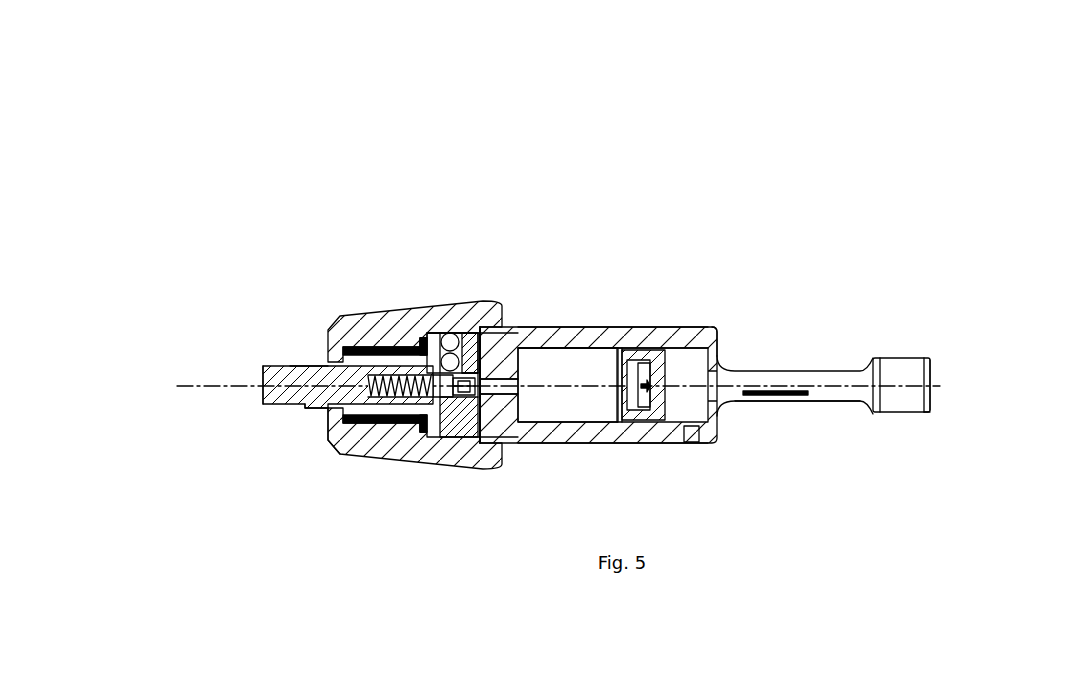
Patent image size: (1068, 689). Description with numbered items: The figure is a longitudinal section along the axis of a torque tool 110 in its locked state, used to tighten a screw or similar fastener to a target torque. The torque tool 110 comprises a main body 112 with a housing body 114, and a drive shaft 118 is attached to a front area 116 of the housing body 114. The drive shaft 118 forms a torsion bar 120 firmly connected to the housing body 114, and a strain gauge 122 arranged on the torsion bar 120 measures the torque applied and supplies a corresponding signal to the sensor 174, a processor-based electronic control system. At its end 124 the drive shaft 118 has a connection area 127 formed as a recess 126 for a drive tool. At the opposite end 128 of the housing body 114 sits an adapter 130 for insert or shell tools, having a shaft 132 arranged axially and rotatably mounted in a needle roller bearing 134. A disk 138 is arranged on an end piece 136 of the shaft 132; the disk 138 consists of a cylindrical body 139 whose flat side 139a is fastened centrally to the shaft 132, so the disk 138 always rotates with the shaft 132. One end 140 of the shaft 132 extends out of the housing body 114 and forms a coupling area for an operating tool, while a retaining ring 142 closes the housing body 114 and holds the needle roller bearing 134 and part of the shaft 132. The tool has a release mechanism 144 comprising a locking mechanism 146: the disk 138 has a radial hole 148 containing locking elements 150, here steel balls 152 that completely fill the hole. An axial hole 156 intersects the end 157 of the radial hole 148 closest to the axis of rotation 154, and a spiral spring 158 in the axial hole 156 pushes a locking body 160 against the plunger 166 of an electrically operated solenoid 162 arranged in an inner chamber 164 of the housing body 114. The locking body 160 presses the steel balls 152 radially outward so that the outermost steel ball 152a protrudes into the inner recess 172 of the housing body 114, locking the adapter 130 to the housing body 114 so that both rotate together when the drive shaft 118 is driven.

The torque tool 110 is at (622, 303).
The main body 112 is at (642, 495).
The housing body 114 is at (644, 283).
The front area 116 is at (762, 306).
The drive shaft 118 is at (798, 361).
The torsion bar 120 is at (841, 429).
The strain gauge 122 is at (805, 438).
The end 124 is at (951, 363).
The recess 126 is at (977, 435).
The connection area 127 is at (984, 383).
The end 128 is at (351, 412).
The adapter 130 is at (310, 325).
The shaft 132 is at (257, 423).
The needle roller bearing 134 is at (357, 486).
The end piece 136 is at (388, 503).
The disk 138 is at (487, 499).
The cylindrical body 139 is at (503, 472).
The flat side 139a is at (387, 282).
The end 140 is at (200, 365).
The retaining ring 142 is at (273, 445).
The release mechanism 144 is at (473, 221).
The locking mechanism 146 is at (541, 338).
The radial hole 148 is at (512, 287).
The locking elements 150 is at (405, 220).
The steel balls 152 is at (400, 256).
The outermost steel ball 152a is at (387, 238).
The axis of rotation 154 is at (520, 404).
The axial hole 156 is at (360, 288).
The end 157 is at (244, 327).
The spiral spring 158 is at (355, 303).
The locking body 160 is at (409, 501).
The solenoid 162 is at (584, 420).
The inner chamber 164 is at (613, 314).
The plunger 166 is at (539, 453).
The inner recess 172 is at (508, 274).
The sensor 174 is at (728, 463).